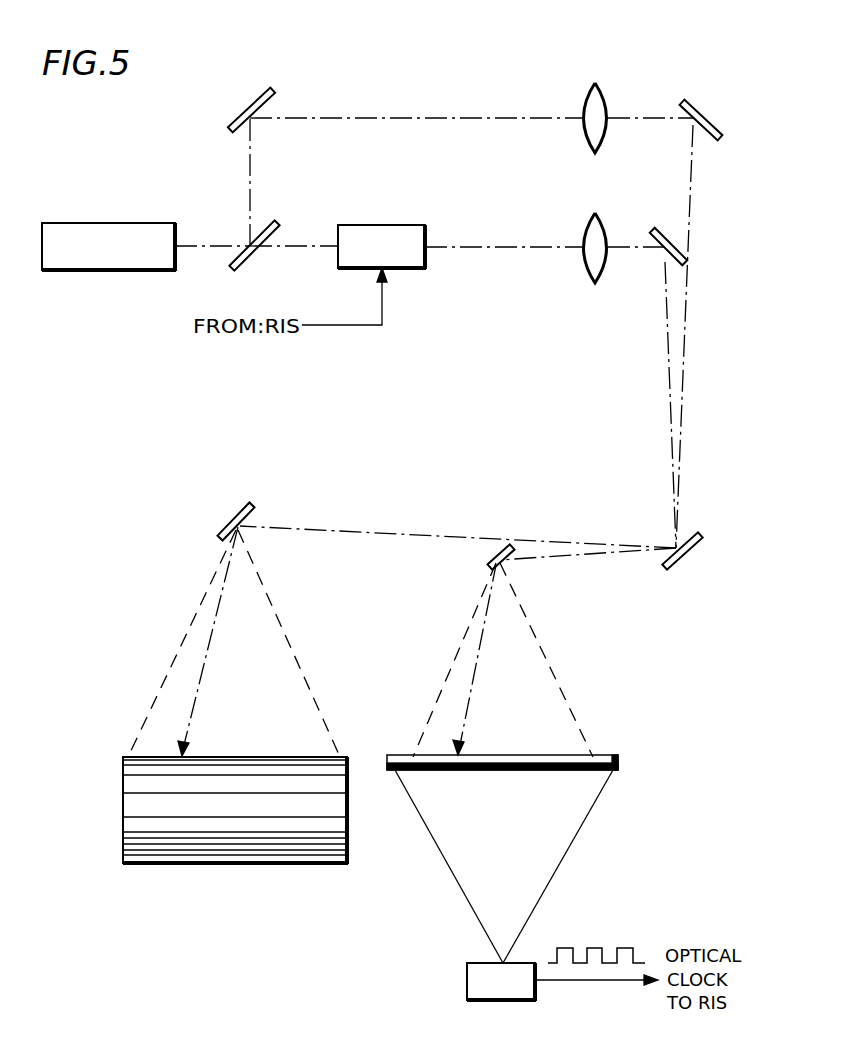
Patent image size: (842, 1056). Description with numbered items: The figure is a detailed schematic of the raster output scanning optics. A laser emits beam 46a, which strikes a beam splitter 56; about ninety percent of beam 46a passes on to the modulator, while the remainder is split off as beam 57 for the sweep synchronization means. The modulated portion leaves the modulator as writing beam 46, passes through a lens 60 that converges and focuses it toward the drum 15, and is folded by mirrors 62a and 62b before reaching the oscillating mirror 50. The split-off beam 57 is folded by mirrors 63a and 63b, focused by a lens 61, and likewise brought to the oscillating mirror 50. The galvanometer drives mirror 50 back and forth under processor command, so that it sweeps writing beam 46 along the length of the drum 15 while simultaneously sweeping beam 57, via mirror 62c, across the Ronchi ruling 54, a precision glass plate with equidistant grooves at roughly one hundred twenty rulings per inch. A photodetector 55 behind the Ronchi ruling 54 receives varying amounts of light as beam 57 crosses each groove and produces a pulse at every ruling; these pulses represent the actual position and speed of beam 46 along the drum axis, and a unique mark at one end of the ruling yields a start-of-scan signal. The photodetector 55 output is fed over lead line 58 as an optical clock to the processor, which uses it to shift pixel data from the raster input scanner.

The drum 15 is at (345, 757).
The modulated laser beam 46 is at (497, 247).
The laser beam 46a is at (203, 246).
The oscillating mirror 50 is at (688, 556).
The Ronchi ruling 54 is at (518, 770).
The photodetector 55 is at (467, 975).
The beam splitter 56 is at (277, 232).
The beam 57 is at (390, 90).
The lead line 58 is at (596, 976).
The lens 60 is at (587, 230).
The lens 61 is at (586, 100).
The mirror 62a is at (670, 233).
The mirror 62b is at (230, 516).
The mirror 62c is at (490, 560).
The mirror 63a is at (266, 98).
The mirror 63b is at (712, 108).